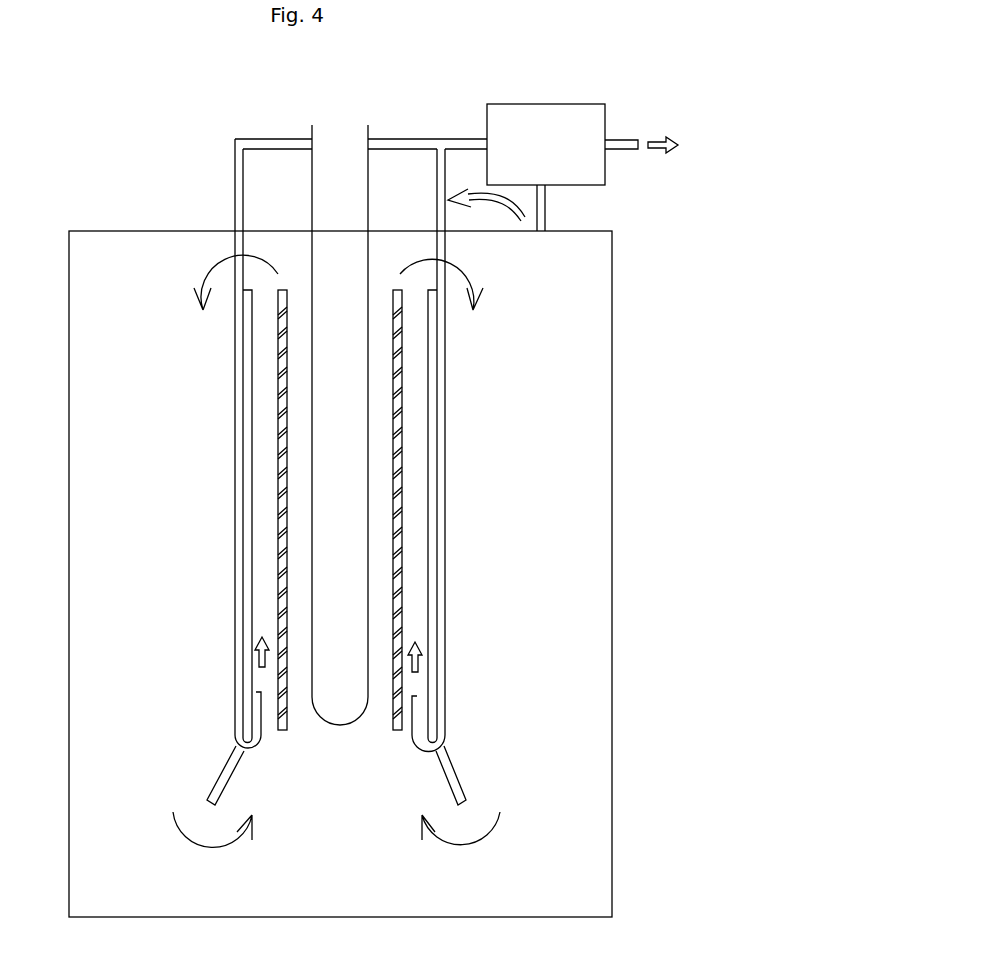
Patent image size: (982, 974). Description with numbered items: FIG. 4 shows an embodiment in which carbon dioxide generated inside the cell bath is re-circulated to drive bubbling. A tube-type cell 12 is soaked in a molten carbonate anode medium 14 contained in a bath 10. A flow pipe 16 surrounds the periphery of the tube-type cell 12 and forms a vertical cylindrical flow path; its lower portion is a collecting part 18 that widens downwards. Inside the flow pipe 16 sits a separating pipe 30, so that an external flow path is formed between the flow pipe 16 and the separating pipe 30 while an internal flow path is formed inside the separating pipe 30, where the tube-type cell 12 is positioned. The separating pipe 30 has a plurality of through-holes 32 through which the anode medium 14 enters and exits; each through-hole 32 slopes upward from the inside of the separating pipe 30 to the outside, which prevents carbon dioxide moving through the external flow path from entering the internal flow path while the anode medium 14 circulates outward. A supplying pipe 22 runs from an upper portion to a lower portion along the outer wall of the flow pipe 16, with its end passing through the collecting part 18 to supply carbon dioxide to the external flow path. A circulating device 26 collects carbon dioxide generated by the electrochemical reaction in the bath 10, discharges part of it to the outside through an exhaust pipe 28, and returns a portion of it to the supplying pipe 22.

The bath 10 is at (120, 231).
The tube-type cell 12 is at (311, 131).
The anode medium 14 is at (168, 258).
The flow pipe 16 is at (247, 527).
The collecting part 18 is at (227, 772).
The supplying pipe 22 is at (243, 213).
The circulating device 26 is at (487, 128).
The exhaust pipe 28 is at (546, 213).
The separating pipe 30 is at (277, 437).
The through-holes 32 is at (276, 466).